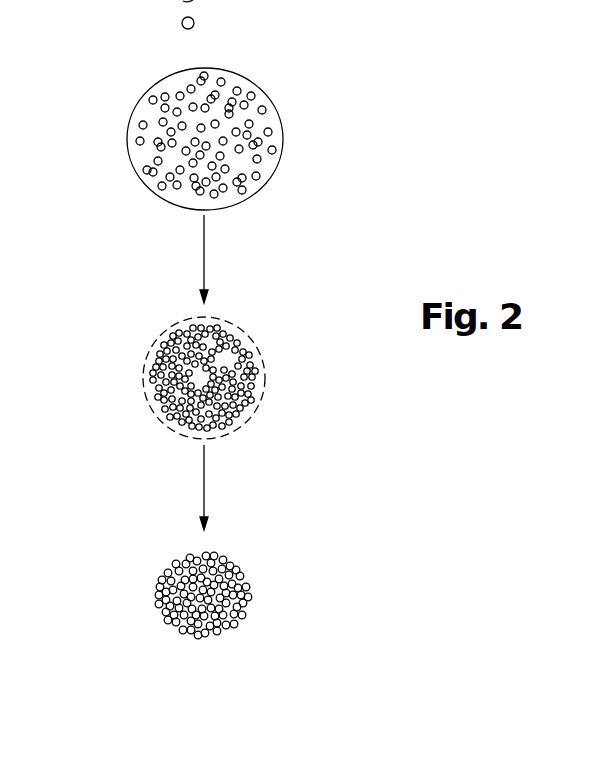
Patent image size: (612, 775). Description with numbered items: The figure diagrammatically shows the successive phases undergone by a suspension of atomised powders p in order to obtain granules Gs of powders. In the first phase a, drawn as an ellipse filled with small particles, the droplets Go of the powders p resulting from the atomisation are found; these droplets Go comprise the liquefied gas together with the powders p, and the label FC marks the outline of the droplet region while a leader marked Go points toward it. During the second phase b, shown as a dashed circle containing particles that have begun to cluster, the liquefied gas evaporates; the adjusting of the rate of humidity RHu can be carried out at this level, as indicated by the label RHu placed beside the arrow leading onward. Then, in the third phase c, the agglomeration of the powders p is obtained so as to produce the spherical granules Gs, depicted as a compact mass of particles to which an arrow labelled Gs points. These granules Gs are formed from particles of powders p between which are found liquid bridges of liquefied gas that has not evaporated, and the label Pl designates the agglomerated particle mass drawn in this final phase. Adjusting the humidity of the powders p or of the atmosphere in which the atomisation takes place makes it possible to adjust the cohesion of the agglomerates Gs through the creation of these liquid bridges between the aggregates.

The phase a is at (86, 78).
The phase b is at (134, 317).
The phase c is at (145, 530).
The fuel cell / catalyst layer FC is at (250, 86).
The powders p is at (278, 138).
The droplets Go is at (157, 213).
The rate of humidity RHu is at (150, 462).
The particle cluster (plug) Pl is at (233, 556).
The granules Gs is at (317, 585).